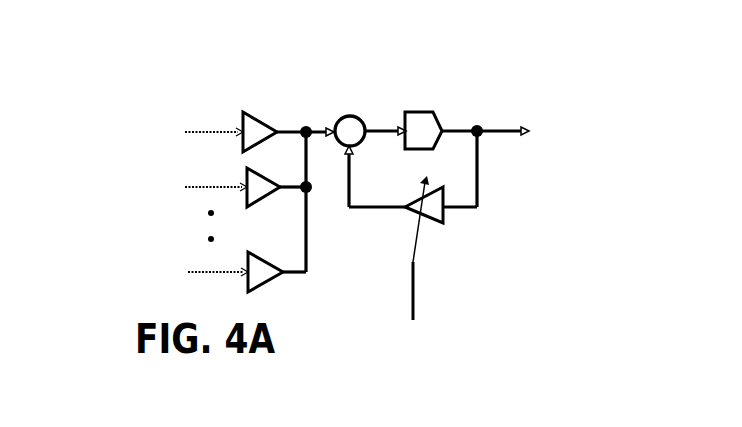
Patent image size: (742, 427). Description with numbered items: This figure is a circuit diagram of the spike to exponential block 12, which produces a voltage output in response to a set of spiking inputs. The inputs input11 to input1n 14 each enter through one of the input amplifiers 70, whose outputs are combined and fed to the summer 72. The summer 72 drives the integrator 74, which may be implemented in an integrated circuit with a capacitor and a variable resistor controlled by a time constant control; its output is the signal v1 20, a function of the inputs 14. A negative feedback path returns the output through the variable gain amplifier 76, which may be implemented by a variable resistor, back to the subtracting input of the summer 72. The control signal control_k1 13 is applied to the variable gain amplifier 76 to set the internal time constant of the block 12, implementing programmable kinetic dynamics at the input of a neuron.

The spike to exponential block 12 is at (362, 78).
The inputs input11 to input1n 14 is at (130, 117).
The input amplifiers 70 is at (255, 118).
The summer 72 is at (345, 112).
The integrator 74 is at (437, 114).
The signal v1 20 is at (518, 134).
The variable gain amplifier 76 is at (440, 222).
The control_k1 13 is at (416, 279).